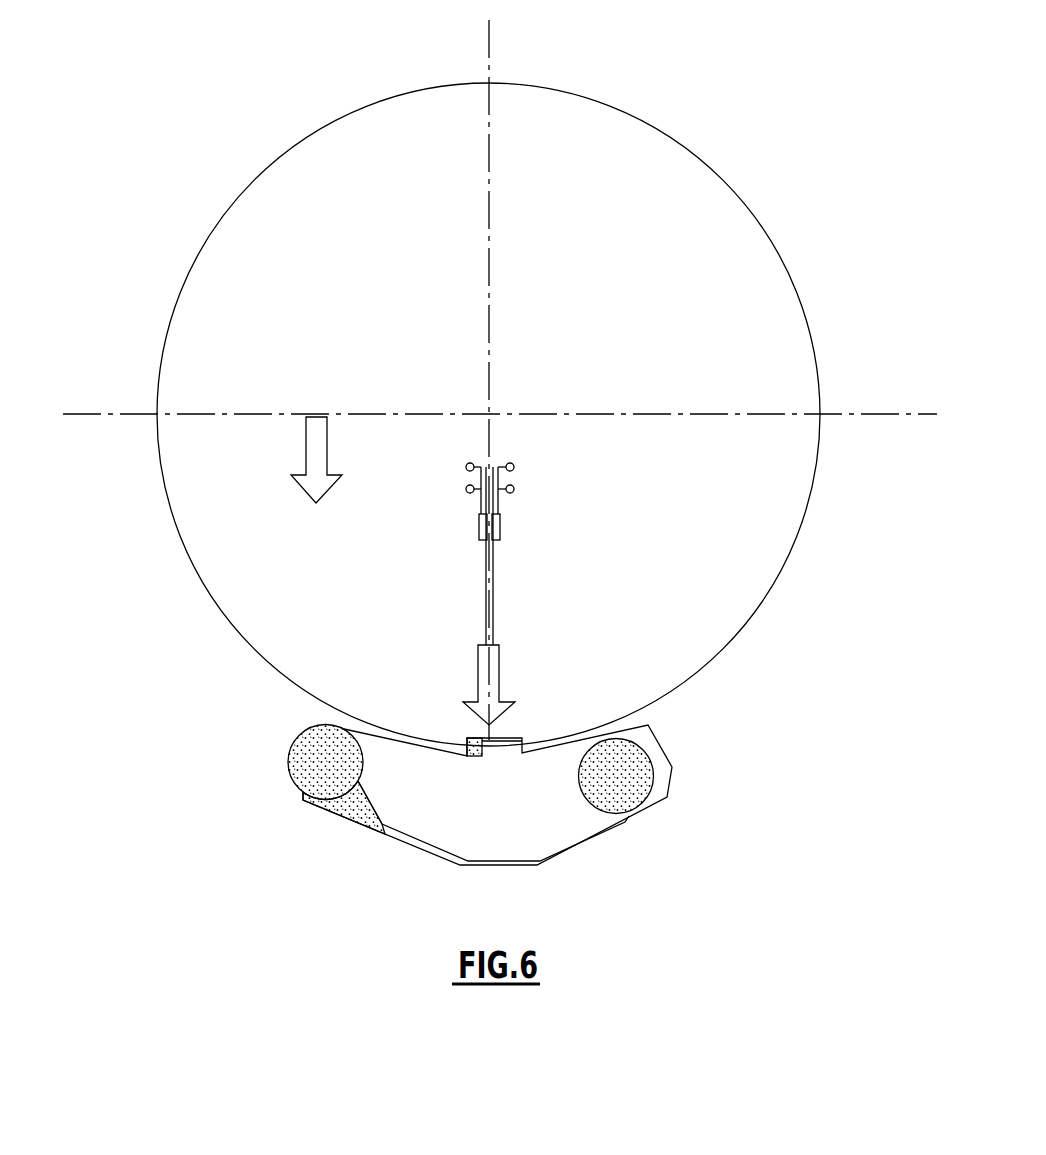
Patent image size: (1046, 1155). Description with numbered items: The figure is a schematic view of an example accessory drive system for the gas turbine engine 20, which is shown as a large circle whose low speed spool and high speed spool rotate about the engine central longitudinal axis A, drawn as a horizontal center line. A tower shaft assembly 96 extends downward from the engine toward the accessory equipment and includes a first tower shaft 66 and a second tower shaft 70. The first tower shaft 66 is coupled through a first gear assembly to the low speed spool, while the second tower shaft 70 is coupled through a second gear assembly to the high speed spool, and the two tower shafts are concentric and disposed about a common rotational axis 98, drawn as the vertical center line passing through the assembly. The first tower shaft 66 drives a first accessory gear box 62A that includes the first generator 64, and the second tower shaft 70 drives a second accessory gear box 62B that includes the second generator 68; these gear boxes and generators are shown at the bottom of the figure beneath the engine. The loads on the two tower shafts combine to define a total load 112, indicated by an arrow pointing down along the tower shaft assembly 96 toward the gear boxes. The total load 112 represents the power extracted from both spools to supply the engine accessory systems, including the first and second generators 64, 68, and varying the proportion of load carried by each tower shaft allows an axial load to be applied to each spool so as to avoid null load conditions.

The gas turbine engine 20 is at (760, 222).
The common rotational axis 98 is at (489, 44).
The engine central longitudinal axis A is at (497, 405).
The tower shaft assembly 96 is at (681, 491).
The second tower shaft 70 is at (465, 468).
The first tower shaft 66 is at (494, 572).
The total load 112 is at (500, 675).
The first accessory gear box 62A is at (672, 765).
The second accessory gear box 62B is at (340, 818).
The second generator 68 is at (290, 762).
The first generator 64 is at (640, 808).